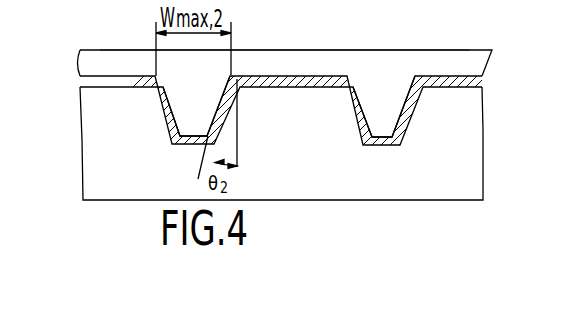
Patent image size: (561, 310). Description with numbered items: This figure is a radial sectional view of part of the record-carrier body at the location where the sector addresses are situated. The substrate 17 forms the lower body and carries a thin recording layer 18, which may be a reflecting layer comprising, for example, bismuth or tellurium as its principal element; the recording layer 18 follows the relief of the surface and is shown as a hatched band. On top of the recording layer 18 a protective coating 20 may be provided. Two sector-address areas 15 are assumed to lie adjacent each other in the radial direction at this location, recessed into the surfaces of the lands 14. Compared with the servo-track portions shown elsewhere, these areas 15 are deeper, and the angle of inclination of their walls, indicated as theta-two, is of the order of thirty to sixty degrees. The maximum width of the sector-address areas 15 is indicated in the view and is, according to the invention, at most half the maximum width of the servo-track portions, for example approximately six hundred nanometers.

The land 14 is at (95, 75).
The sector-address area 15 is at (380, 125).
The substrate 17 is at (92, 180).
The recording layer 18 is at (465, 78).
The protective coating 20 is at (125, 62).